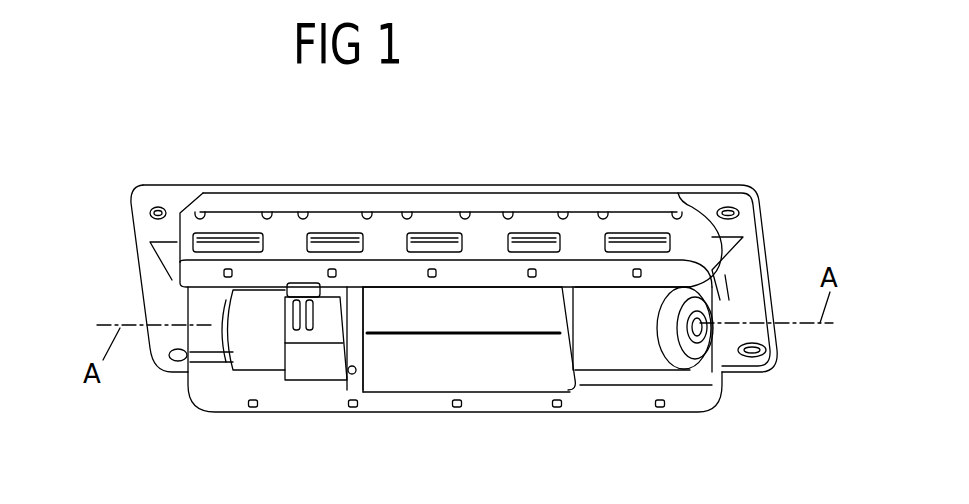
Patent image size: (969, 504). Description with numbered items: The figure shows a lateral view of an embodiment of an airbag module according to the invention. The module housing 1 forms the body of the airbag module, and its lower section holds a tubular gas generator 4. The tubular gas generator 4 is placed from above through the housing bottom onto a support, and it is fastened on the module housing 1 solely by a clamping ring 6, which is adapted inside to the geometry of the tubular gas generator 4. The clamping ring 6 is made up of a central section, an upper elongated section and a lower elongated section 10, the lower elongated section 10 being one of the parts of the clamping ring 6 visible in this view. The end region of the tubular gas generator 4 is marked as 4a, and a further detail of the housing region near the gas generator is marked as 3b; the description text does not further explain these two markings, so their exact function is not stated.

The module housing 1 is at (547, 190).
The tubular gas generator 4 is at (637, 327).
The gas generator end section 4a is at (605, 347).
The strap / retaining band 3b is at (348, 365).
The clamping ring 6 is at (310, 348).
The lower elongated section 10 is at (333, 368).